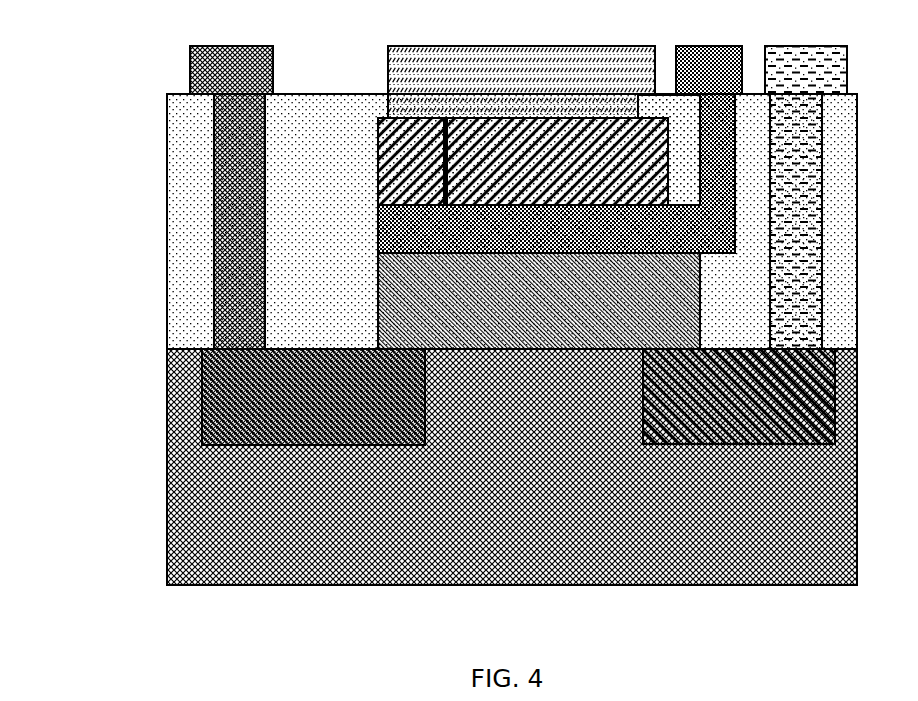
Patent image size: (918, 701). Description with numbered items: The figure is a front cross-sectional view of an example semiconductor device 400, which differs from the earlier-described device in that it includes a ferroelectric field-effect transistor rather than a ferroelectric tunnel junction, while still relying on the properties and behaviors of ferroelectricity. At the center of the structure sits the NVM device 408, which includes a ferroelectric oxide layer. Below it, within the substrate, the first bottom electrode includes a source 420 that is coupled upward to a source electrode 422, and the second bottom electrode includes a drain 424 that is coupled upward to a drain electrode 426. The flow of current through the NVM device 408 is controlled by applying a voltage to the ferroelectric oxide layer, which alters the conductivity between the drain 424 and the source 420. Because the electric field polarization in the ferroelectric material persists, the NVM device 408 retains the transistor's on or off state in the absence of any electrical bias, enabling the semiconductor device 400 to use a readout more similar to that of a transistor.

The semiconductor device 400 is at (53, 102).
The NVM device 408 is at (530, 306).
The source 420 is at (297, 411).
The source electrode 422 is at (217, 84).
The drain 424 is at (703, 411).
The drain electrode 426 is at (794, 82).